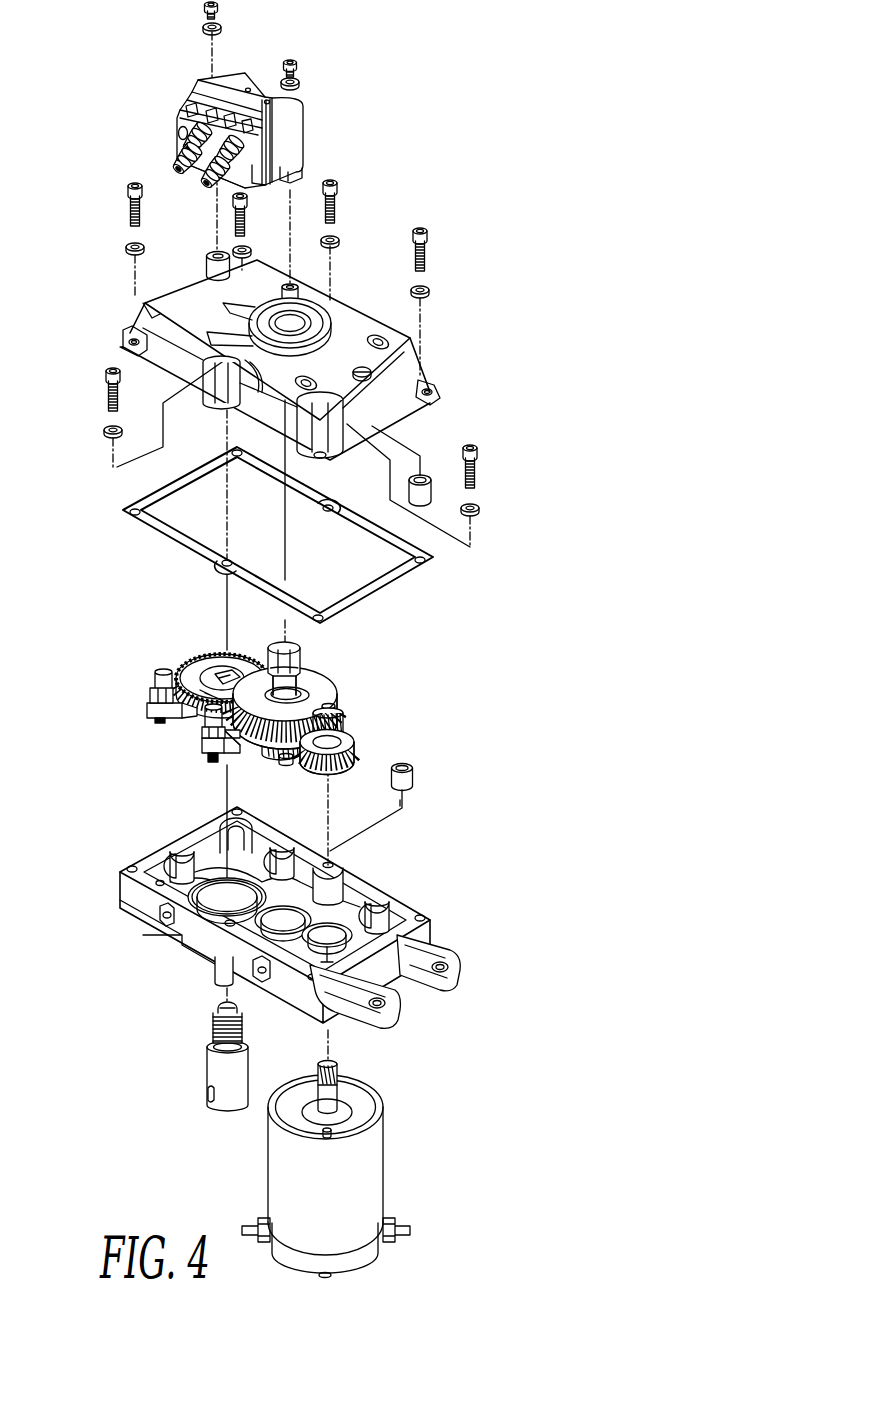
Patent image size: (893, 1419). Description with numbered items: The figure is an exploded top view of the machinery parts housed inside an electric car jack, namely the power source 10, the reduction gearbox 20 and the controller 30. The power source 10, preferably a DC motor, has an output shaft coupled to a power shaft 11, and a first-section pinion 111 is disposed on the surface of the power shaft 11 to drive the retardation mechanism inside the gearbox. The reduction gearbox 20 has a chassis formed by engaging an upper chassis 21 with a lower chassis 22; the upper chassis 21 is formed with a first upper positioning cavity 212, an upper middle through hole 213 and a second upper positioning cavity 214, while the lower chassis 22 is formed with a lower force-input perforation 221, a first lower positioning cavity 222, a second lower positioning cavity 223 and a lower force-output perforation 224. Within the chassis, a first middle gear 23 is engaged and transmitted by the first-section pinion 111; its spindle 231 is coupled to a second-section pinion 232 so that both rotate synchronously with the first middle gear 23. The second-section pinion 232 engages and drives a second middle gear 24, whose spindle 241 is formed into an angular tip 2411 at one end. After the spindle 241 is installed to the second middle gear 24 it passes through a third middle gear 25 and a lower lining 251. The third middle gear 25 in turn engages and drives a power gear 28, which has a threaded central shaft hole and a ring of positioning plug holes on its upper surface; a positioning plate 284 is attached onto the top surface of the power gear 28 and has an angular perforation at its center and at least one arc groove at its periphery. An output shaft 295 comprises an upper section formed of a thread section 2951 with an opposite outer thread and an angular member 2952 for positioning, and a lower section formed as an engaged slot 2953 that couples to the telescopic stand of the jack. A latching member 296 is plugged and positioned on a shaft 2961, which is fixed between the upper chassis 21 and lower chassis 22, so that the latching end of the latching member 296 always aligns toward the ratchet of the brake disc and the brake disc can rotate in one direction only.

The power source 10 is at (341, 1159).
The power shaft 11 is at (364, 1089).
The first-section pinion 111 is at (336, 1073).
The reduction gearbox 20 is at (470, 705).
The upper chassis 21 is at (289, 340).
The first upper positioning cavity 212 is at (366, 356).
The upper middle through hole 213 is at (300, 313).
The second upper positioning cavity 214 is at (193, 303).
The lower chassis 22 is at (290, 917).
The lower force-input perforation 221 is at (395, 995).
The first lower positioning cavity 222 is at (330, 932).
The second lower positioning cavity 223 is at (240, 900).
The lower force-output perforation 224 is at (156, 921).
The first middle gear 23 is at (373, 735).
The spindle 231 is at (336, 710).
The second-section pinion 232 is at (343, 731).
The second middle gear 24 is at (331, 685).
The spindle 241 is at (305, 688).
The angular tip 2411 is at (292, 648).
The third middle gear 25 is at (266, 750).
The lower lining 251 is at (285, 764).
The power gear 28 is at (214, 662).
The positioning plate 284 is at (218, 668).
The output shaft 295 is at (180, 1060).
The thread section 2951 is at (213, 1037).
The angular member 2952 is at (215, 1015).
The engaged slot 2953 is at (212, 1067).
The latching member 296 is at (211, 757).
The shaft 2961 is at (212, 724).
The controller 30 is at (295, 135).